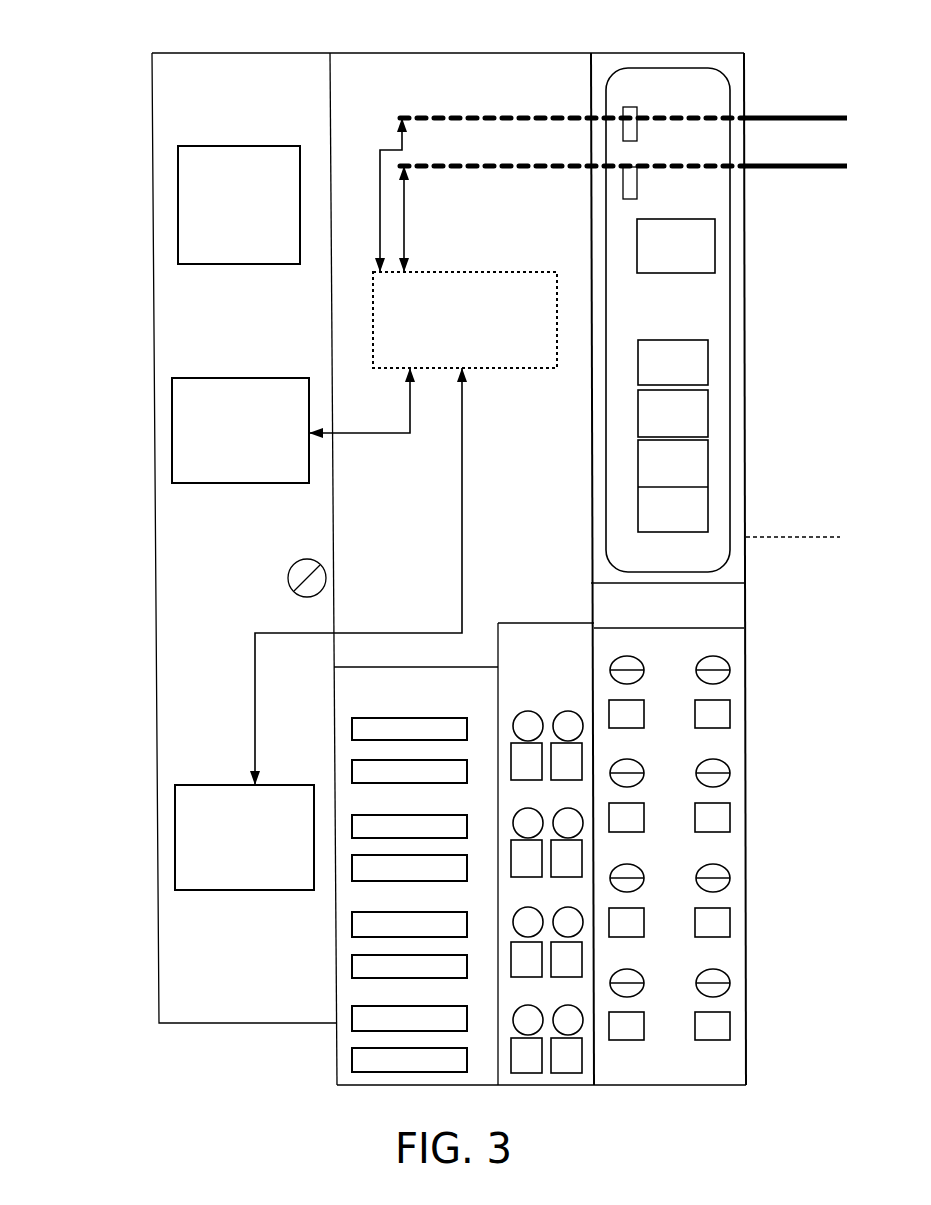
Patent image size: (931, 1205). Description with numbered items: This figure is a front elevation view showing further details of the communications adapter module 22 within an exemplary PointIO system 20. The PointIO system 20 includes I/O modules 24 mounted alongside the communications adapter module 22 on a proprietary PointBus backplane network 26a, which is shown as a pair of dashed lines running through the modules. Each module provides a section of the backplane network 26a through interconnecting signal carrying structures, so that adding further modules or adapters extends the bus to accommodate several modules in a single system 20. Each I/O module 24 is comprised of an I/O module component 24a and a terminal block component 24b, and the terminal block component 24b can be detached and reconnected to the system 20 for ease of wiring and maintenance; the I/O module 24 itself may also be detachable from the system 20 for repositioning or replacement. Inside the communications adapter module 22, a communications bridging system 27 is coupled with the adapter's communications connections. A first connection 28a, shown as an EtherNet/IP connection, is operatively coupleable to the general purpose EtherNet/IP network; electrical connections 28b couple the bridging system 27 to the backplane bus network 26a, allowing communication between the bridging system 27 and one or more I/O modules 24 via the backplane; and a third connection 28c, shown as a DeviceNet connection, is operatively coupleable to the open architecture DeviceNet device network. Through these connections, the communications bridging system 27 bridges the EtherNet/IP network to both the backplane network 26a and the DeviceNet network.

The PointIO system 20 is at (442, 547).
The communications adapter module 22 is at (213, 569).
The I/O module 24 is at (587, 547).
The I/O module component 24a is at (744, 85).
The terminal block component 24b is at (746, 668).
The PointBus backplane network 26a is at (446, 104).
The communications bridging system 27 is at (455, 355).
The first connection 28a is at (172, 431).
The second connection 28b is at (422, 188).
The third connection 28c is at (175, 845).